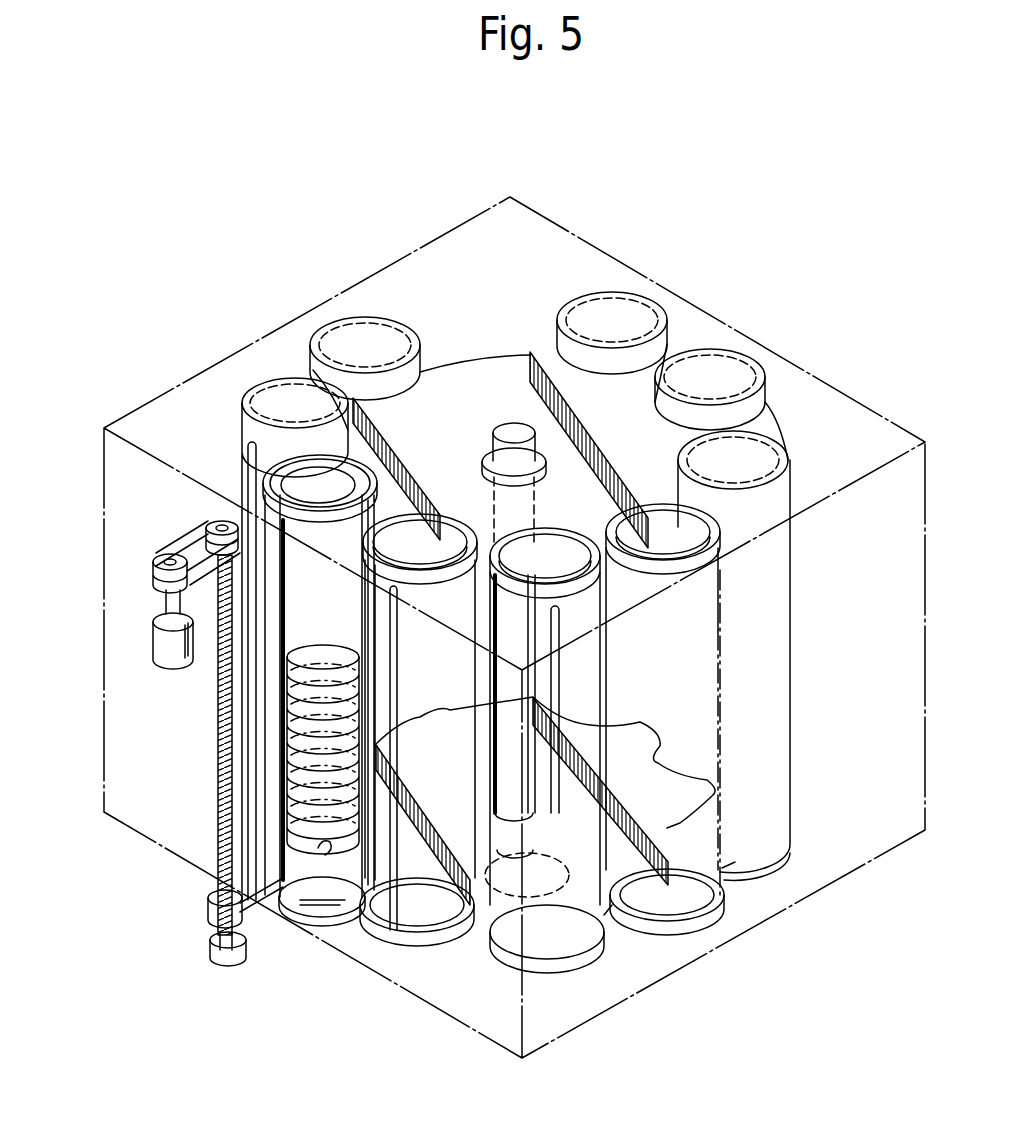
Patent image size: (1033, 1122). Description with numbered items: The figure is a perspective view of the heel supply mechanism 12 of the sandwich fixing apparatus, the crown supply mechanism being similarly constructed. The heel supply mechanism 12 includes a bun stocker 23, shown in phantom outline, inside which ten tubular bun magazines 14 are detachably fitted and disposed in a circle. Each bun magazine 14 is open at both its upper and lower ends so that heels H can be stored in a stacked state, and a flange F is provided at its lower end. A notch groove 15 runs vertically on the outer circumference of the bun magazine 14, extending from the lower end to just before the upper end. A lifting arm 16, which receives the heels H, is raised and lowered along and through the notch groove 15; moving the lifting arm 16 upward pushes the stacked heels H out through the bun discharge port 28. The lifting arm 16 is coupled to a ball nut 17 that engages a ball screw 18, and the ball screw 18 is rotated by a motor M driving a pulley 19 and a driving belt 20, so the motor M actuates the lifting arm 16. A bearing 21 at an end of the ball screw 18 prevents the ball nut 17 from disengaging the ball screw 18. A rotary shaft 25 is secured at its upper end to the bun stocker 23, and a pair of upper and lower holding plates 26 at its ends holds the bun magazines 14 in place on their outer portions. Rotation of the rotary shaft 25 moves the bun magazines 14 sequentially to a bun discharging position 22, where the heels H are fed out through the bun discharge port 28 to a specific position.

The heel supply mechanism 12 is at (577, 208).
The bun magazine 14 is at (778, 447).
The notch groove 15 is at (280, 720).
The lifting arm 16 is at (337, 905).
The ball nut 17 is at (210, 903).
The ball screw 18 is at (217, 787).
The pulley 19 is at (222, 522).
The driving belt 20 is at (170, 597).
The bearing 21 is at (232, 962).
The bun discharging position 22 is at (307, 613).
The bun stocker 23 is at (877, 413).
The rotary shaft 25 is at (517, 842).
The holding plate 26 is at (613, 397).
The bun discharge port 28 is at (282, 457).
The heel H is at (314, 482).
The motor M is at (165, 647).
The flange F is at (307, 905).